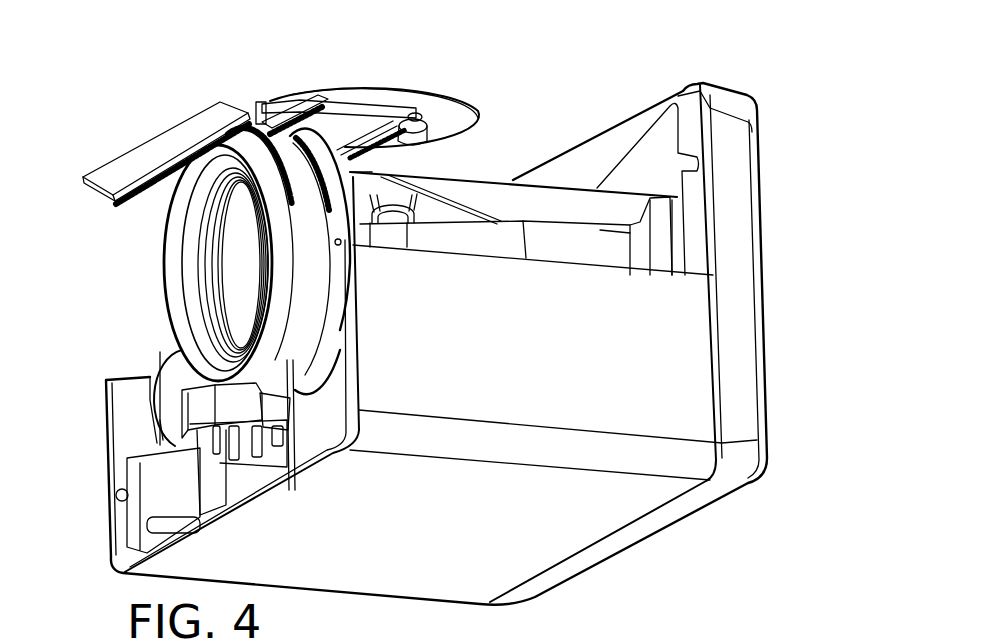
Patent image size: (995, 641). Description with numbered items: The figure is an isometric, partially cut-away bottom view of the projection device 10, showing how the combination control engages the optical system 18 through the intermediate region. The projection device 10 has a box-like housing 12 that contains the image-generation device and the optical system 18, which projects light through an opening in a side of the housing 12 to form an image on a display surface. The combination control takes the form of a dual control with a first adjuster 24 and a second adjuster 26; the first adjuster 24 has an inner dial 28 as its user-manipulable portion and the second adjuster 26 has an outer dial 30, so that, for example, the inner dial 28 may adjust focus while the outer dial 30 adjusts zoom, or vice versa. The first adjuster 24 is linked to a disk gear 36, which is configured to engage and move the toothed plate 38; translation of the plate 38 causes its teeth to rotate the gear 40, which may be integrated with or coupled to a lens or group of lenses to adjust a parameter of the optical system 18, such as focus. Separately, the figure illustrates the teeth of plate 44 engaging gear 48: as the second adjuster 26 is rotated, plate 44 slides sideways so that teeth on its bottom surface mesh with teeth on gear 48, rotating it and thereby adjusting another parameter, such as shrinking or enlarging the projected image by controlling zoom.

The projection device 10 is at (630, 58).
The housing 12 is at (775, 388).
The optical system 18 is at (512, 173).
The first adjuster 24 is at (438, 131).
The second adjuster 26 is at (468, 77).
The inner dial 28 is at (426, 119).
The outer dial 30 is at (418, 82).
The disk gear 36 is at (402, 144).
The toothed plate 38 is at (337, 122).
The gear 40 is at (310, 233).
The plate 44 is at (149, 136).
The gear 48 is at (281, 276).